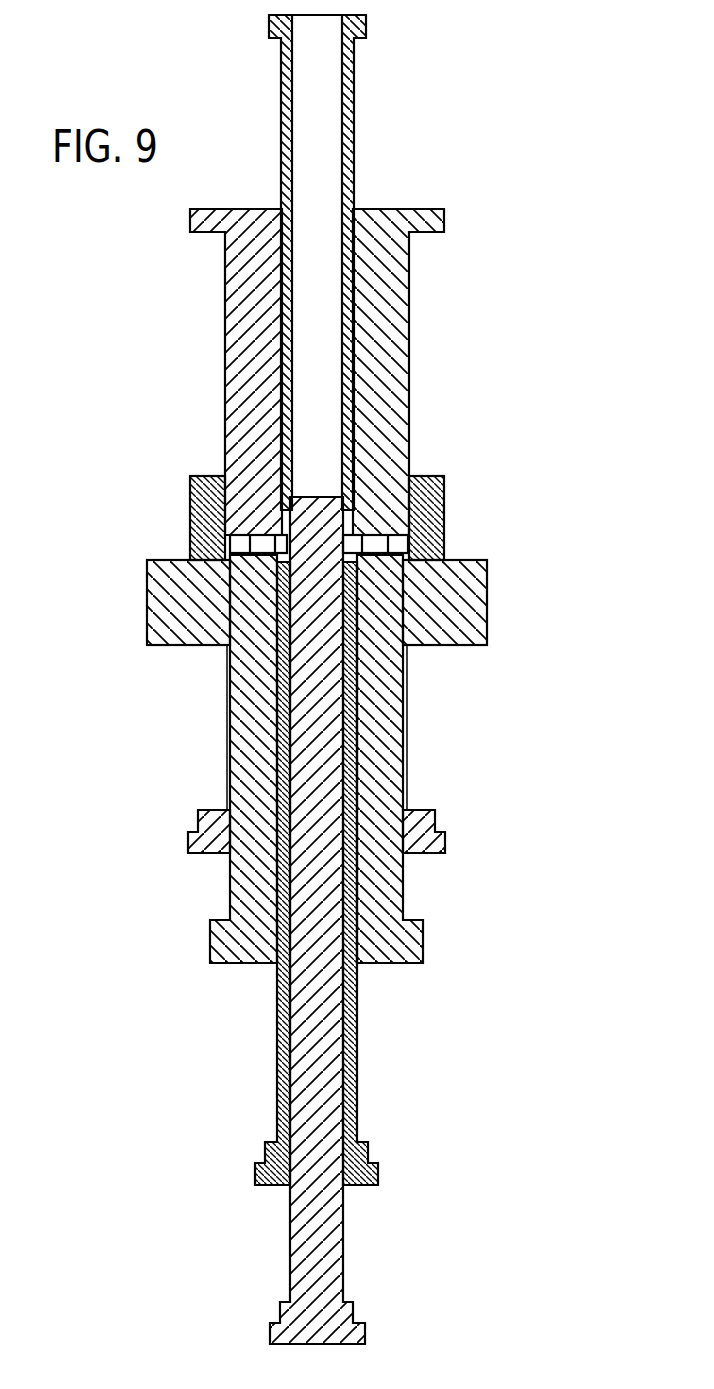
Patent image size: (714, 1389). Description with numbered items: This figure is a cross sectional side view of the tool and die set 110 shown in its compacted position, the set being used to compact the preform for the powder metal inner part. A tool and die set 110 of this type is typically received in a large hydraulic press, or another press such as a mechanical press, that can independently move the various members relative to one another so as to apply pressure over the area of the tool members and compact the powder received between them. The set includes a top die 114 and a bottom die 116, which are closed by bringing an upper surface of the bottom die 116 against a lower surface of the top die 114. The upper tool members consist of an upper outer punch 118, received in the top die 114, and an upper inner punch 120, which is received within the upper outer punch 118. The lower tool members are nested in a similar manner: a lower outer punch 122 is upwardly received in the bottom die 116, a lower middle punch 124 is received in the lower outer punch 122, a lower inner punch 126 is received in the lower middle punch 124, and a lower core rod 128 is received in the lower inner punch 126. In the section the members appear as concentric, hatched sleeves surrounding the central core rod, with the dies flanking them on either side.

The tool and die set 110 is at (565, 192).
The top die 114 is at (435, 508).
The bottom die 116 is at (482, 595).
The upper outer punch 118 is at (231, 343).
The upper inner punch 120 is at (351, 120).
The lower outer punch 122 is at (407, 750).
The lower middle punch 124 is at (252, 728).
The lower inner punch 126 is at (278, 1062).
The lower core rod 128 is at (331, 1079).